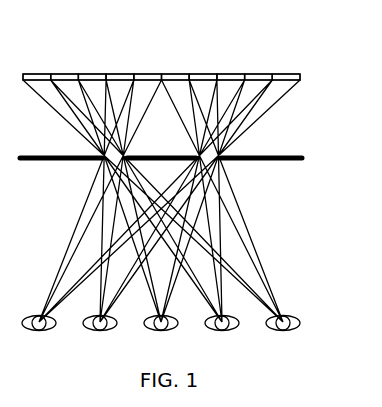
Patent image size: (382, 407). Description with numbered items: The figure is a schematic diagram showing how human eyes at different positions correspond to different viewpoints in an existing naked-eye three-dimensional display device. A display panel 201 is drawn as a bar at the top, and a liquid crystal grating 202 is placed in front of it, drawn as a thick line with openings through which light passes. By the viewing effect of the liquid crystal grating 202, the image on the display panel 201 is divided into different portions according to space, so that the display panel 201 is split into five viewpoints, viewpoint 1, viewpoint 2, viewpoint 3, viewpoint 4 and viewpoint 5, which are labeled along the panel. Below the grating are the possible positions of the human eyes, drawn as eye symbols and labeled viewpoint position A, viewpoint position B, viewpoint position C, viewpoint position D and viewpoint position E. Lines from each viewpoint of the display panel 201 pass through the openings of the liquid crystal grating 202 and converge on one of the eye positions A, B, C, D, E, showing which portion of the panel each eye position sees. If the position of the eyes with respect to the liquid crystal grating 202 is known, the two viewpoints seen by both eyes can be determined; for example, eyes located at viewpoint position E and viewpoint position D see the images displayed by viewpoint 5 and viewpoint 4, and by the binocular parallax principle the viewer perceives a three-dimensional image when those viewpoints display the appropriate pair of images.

The display panel 201 is at (352, 50).
The liquid crystal grating 202 is at (302, 160).
The viewpoint 1 is at (106, 71).
The viewpoint 2 is at (134, 71).
The viewpoint 3 is at (161, 71).
The viewpoint 4 is at (189, 71).
The viewpoint 5 is at (217, 71).
The viewpoint position A is at (283, 338).
The viewpoint position B is at (222, 338).
The viewpoint position C is at (161, 338).
The viewpoint position D is at (100, 338).
The viewpoint position E is at (39, 338).